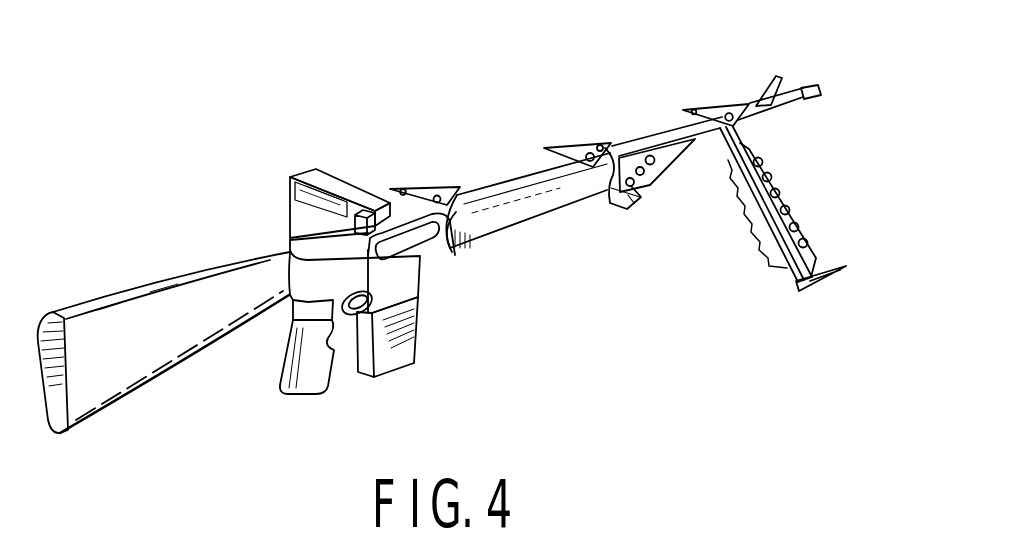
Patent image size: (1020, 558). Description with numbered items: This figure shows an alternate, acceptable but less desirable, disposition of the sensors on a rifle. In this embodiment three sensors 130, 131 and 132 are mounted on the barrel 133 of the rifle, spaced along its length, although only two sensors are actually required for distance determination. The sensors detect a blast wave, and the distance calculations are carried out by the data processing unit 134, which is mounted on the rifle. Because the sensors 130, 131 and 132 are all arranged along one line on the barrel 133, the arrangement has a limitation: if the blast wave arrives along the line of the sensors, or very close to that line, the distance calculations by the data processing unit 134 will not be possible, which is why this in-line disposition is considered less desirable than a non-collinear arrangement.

The sensor 130 is at (420, 187).
The sensor 131 is at (578, 142).
The sensor 132 is at (721, 105).
The barrel 133 is at (518, 215).
The data processing unit 134 is at (290, 188).